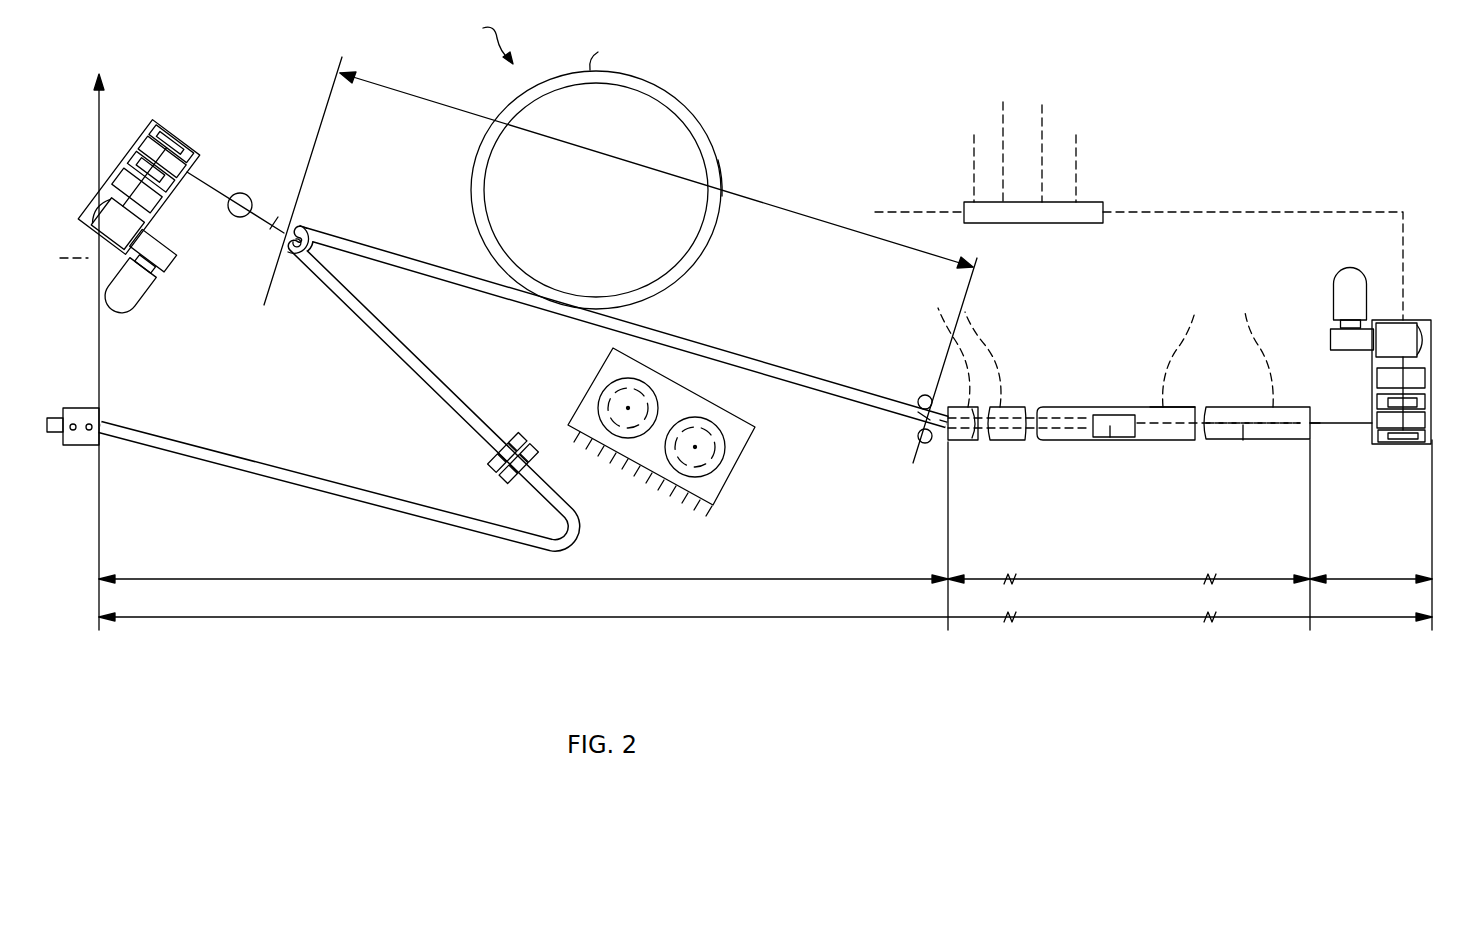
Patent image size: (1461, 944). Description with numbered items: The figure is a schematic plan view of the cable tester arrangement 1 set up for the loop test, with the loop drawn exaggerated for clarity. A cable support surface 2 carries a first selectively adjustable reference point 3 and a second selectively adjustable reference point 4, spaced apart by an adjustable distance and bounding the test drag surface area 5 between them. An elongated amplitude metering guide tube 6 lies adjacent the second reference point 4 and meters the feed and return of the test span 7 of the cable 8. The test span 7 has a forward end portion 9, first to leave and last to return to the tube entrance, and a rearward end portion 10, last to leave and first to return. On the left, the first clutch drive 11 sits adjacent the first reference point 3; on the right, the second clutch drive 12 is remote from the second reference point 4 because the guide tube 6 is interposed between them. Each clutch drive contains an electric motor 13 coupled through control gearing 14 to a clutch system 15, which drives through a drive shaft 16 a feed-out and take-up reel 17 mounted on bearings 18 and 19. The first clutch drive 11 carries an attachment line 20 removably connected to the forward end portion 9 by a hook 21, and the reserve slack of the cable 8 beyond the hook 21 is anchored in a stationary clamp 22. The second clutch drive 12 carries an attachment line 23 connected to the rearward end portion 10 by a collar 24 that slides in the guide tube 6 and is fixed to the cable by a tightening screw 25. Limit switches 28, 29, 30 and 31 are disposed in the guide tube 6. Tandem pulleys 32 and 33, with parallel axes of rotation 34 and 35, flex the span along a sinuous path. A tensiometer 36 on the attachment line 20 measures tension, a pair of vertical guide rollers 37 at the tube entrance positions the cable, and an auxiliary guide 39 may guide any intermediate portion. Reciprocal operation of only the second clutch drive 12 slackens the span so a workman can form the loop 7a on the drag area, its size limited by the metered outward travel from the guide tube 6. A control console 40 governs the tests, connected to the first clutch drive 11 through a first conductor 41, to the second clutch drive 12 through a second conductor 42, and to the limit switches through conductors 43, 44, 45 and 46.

The cable tester arrangement 1 is at (489, 36).
The cable support surface 2 is at (325, 378).
The first selectively adjustable reference point 3 is at (294, 240).
The second selectively adjustable reference point 4 is at (915, 410).
The test drag surface area 5 is at (588, 235).
The amplitude metering guide tube 6 is at (1078, 440).
The test span 7 is at (780, 372).
The loop 7a is at (722, 165).
The cable 8 is at (255, 466).
The forward end portion 9 is at (302, 224).
The rearward end portion 10 is at (886, 396).
The first clutch drive 11 is at (157, 125).
The second clutch drive 12 is at (1412, 320).
The electric motor 13 is at (143, 280).
The control gearing 14 is at (105, 205).
The clutch system 15 is at (110, 185).
The drive shaft 16 is at (183, 137).
The reel 17 is at (145, 148).
The bearing 18 is at (138, 165).
The bearing 19 is at (192, 153).
The attachment line 20 is at (222, 196).
The hook 21 is at (276, 232).
The stationary clamp 22 is at (101, 413).
The attachment line 23 is at (1243, 440).
The collar 24 is at (1116, 438).
The tightening screw 25 is at (1100, 415).
The limit switch 28 is at (1273, 407).
The limit switch 29 is at (1000, 407).
The limit switch 30 is at (964, 441).
The limit switch 31 is at (1163, 405).
The pulley 32 is at (600, 400).
The pulley 33 is at (700, 420).
The axis of rotation 34 is at (627, 409).
The axis of rotation 35 is at (694, 448).
The tensiometer 36 is at (240, 193).
The vertical guide rollers 37 is at (924, 395).
The auxiliary guide 39 is at (482, 460).
The control console 40 is at (968, 218).
The first conductor 41 is at (80, 262).
The second conductor 42 is at (1403, 266).
The conductor 43 is at (1078, 156).
The conductor 44 is at (1000, 120).
The conductor 45 is at (972, 152).
The conductor 46 is at (1043, 120).